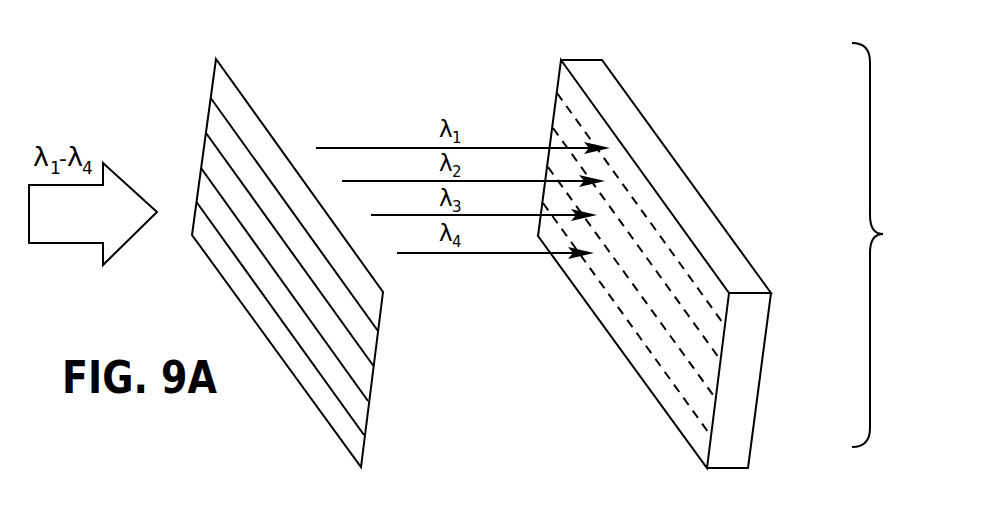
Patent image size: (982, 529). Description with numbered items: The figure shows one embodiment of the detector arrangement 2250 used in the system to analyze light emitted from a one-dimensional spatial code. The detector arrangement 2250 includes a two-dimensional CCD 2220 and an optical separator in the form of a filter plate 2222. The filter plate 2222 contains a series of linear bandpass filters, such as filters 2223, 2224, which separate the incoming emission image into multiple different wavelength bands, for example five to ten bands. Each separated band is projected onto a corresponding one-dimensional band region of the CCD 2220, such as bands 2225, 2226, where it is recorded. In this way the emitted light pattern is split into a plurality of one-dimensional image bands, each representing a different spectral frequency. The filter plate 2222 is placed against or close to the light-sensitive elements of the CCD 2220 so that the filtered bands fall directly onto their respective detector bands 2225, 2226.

The two-dimensional CCD 2220 is at (667, 148).
The filter plate 2222 is at (245, 98).
The linear bandpass filter 2223 is at (371, 337).
The linear bandpass filter 2224 is at (367, 371).
The band 2225 is at (720, 347).
The band 2226 is at (715, 385).
The detector arrangement 2250 is at (896, 245).